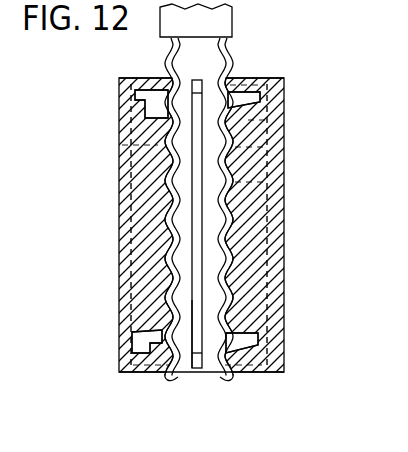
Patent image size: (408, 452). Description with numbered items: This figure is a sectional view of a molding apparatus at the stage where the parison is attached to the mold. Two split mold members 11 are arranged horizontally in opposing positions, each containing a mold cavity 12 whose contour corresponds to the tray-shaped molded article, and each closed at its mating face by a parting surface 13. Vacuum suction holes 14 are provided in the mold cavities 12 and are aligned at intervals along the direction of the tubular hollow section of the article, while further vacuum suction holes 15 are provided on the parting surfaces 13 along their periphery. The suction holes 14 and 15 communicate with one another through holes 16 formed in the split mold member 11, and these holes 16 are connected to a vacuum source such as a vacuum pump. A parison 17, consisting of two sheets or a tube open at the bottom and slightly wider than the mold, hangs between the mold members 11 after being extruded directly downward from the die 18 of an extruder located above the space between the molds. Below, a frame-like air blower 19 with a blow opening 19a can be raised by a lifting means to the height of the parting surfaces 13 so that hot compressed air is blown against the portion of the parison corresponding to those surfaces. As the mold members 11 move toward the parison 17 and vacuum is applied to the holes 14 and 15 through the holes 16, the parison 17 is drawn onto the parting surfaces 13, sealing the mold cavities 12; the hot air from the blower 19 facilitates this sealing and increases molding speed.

The split mold member 11 is at (119, 193).
The mold cavity 12 is at (150, 165).
The parting surface 13 is at (178, 378).
The vacuum suction hole 14 is at (152, 140).
The vacuum suction hole 15 is at (152, 78).
The hole 16 is at (130, 295).
The parison 17 is at (229, 56).
The die 18 is at (225, 24).
The air blower 19 is at (197, 369).
The blow opening 19a is at (192, 366).